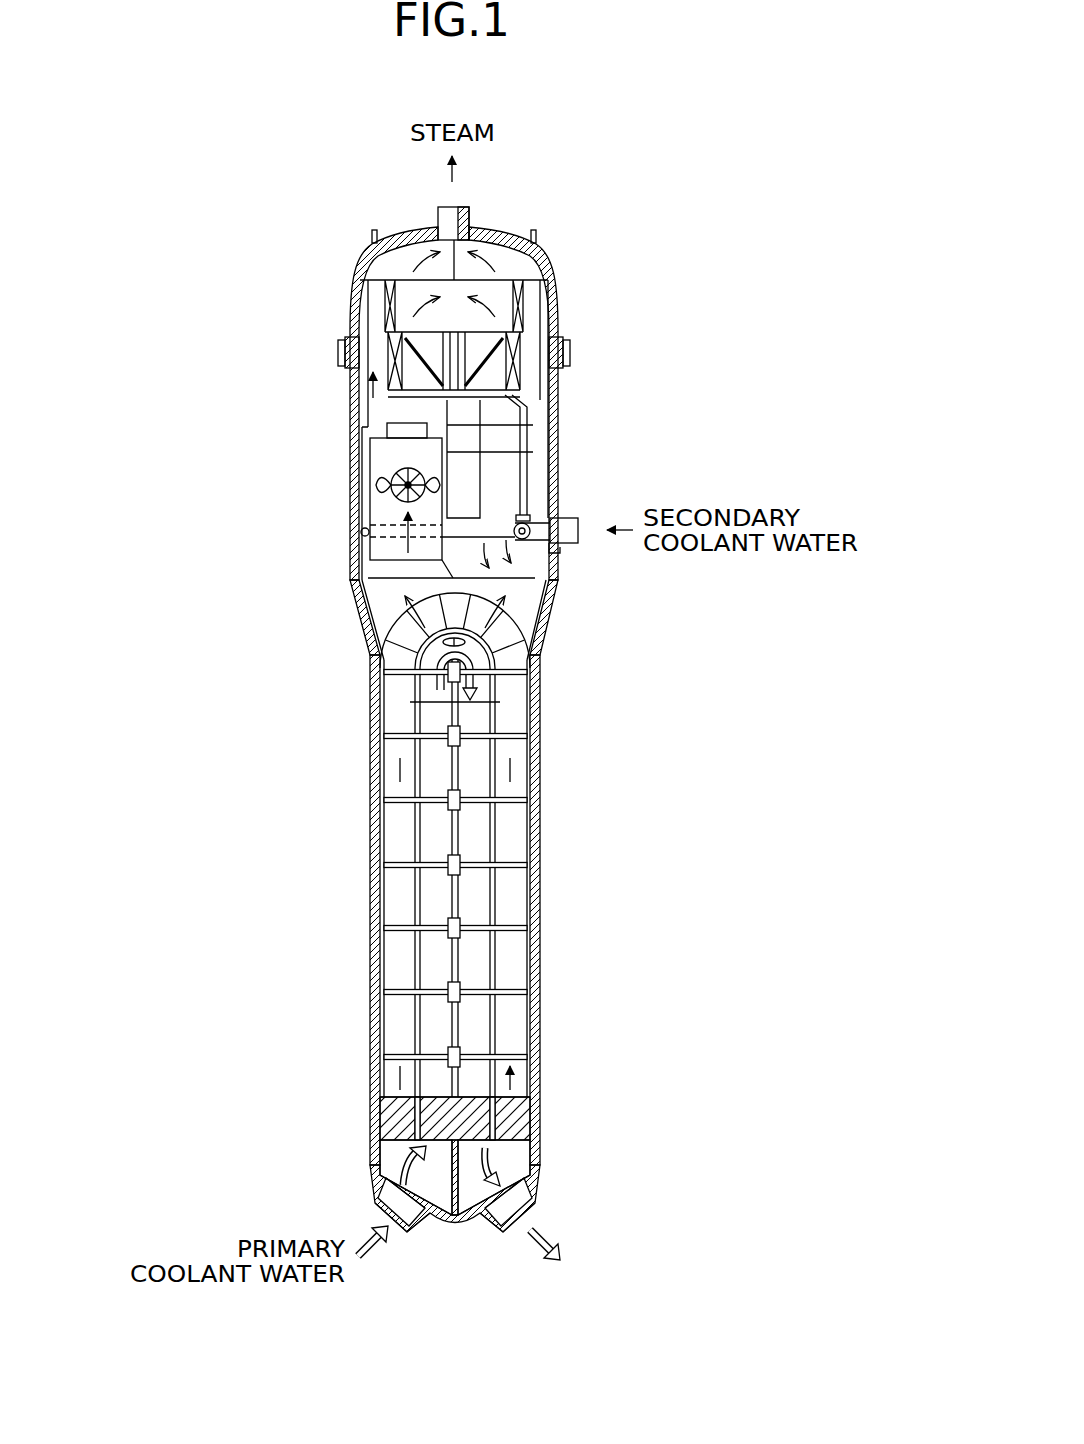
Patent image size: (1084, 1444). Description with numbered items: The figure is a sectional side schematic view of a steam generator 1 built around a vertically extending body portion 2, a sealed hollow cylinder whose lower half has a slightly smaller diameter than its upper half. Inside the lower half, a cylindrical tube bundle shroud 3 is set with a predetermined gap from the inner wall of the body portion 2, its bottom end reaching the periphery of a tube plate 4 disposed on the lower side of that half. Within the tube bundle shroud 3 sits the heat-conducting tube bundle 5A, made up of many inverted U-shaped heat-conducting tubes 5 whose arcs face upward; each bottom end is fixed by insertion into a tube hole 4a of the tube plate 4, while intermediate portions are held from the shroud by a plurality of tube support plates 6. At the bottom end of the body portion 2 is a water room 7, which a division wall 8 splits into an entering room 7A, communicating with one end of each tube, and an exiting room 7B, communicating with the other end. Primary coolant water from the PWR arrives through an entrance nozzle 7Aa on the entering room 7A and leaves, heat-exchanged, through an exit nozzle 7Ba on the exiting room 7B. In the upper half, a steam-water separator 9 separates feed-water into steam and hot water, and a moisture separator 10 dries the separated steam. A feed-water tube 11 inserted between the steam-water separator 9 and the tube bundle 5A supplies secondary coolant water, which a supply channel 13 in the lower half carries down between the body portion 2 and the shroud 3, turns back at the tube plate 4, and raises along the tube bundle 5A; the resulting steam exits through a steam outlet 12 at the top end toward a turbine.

The steam generator 1 is at (736, 124).
The body portion 2 is at (351, 389).
The tube bundle shroud 3 is at (363, 611).
The tube plate 4 is at (540, 1122).
The tube hole 4a is at (507, 1107).
The heat-conducting tube 5 is at (413, 832).
The heat-conducting tube bundle 5A is at (529, 631).
The tube support plate 6 is at (528, 671).
The water room 7 is at (370, 1129).
The entering room 7A is at (375, 1178).
The exiting room 7B is at (517, 1161).
The entrance nozzle 7Aa is at (403, 1223).
The exit nozzle 7Ba is at (512, 1223).
The division wall 8 is at (456, 1224).
The steam-water separator 9 is at (376, 476).
The moisture separator 10 is at (496, 311).
The feed-water tube 11 is at (562, 528).
The steam outlet 12 is at (460, 218).
The supply channel 13 is at (381, 1013).